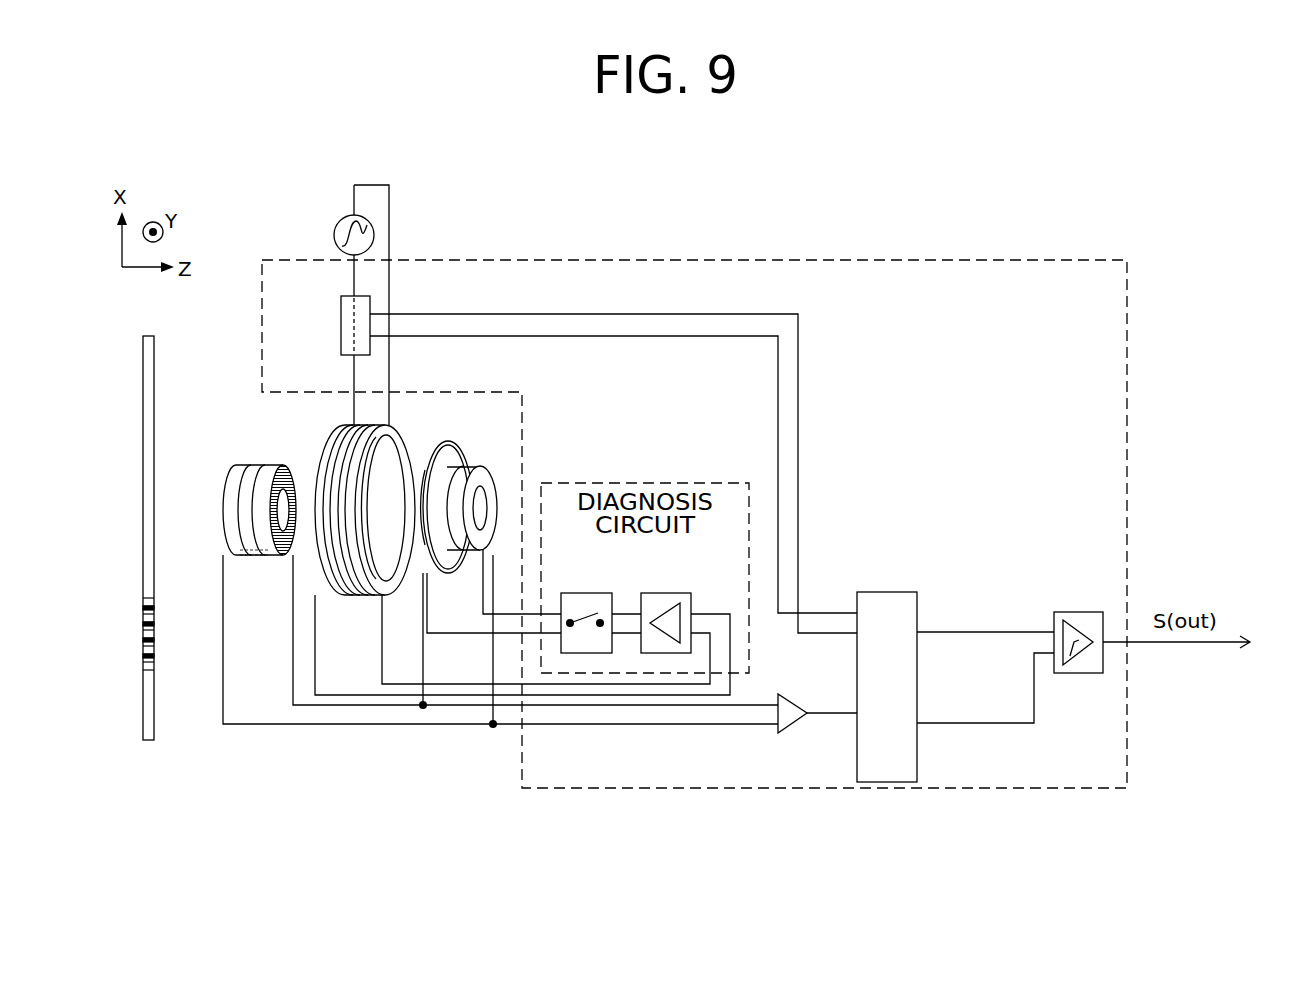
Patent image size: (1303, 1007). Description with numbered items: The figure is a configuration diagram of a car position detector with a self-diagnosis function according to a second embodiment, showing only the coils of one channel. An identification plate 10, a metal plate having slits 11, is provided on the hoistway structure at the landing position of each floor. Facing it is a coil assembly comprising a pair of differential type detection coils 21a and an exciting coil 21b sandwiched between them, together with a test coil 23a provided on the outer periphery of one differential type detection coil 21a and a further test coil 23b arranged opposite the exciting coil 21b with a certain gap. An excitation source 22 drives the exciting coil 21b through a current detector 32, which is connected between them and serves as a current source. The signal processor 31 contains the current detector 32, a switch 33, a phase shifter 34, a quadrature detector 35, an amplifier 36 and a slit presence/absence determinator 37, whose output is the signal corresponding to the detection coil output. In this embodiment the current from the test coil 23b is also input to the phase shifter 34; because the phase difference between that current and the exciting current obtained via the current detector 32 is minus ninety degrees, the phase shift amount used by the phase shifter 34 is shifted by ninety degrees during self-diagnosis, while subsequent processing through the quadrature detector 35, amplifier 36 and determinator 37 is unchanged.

The identification plate 10 is at (143, 395).
The slits 11 is at (143, 600).
The differential type detection coil 21a is at (369, 513).
The exciting coil 21b is at (386, 532).
The excitation source 22 is at (337, 222).
The test coil 23a is at (458, 575).
The test coil 23b is at (345, 597).
The signal processor 31 is at (1085, 260).
The current detector 32 is at (341, 306).
The switch 33 is at (585, 593).
The phase shifter 34 is at (661, 593).
The quadrature detector 35 is at (885, 593).
The amplifier 36 is at (793, 703).
The slit presence/absence determinator 37 is at (1073, 612).